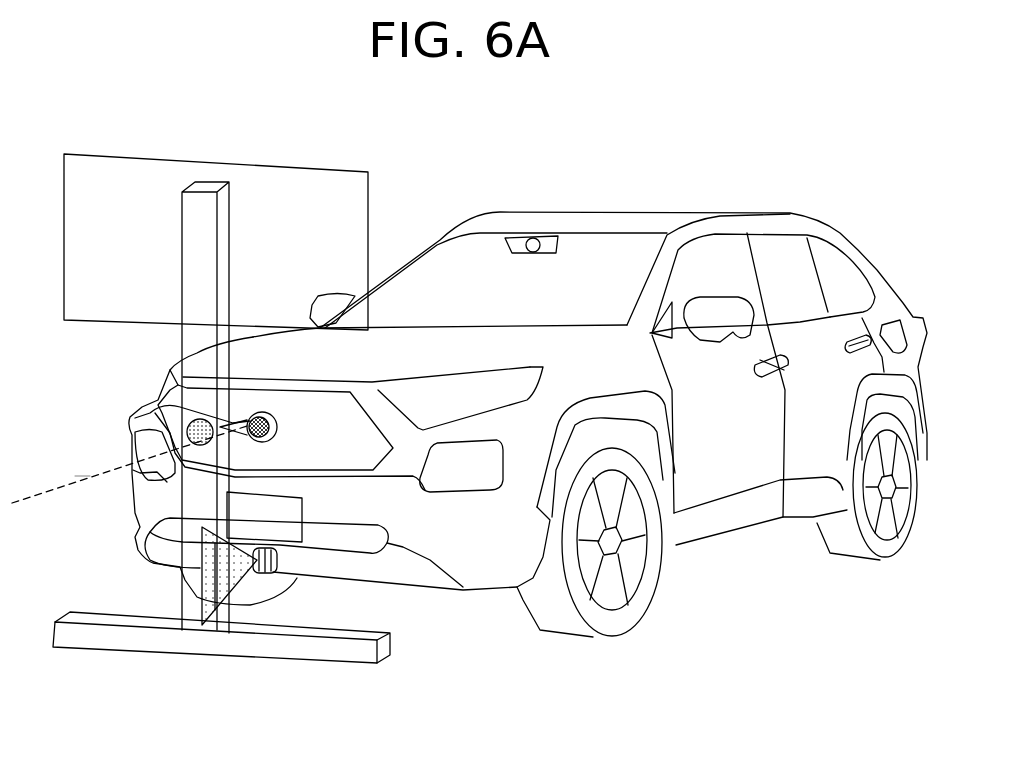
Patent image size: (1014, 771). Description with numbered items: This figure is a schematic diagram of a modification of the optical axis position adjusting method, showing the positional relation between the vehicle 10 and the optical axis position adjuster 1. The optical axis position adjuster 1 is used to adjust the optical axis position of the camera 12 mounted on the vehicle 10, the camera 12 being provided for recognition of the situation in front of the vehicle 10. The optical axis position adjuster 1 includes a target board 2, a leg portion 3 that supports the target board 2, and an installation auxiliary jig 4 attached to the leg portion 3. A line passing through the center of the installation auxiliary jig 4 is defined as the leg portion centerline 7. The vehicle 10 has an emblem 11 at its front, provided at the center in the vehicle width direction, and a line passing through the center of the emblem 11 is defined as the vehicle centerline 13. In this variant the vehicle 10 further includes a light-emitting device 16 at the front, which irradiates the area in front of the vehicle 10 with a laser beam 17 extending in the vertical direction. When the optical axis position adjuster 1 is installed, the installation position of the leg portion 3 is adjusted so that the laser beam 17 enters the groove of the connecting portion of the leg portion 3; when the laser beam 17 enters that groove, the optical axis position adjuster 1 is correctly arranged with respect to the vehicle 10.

The optical axis position adjuster 1 is at (203, 664).
The target board 2 is at (82, 256).
The leg portion 3 is at (383, 648).
The installation auxiliary jig 4 is at (187, 431).
The leg portion centerline 7 is at (68, 478).
The vehicle 10 is at (824, 189).
The emblem 11 is at (287, 437).
The camera 12 is at (543, 248).
The vehicle centerline 13 is at (82, 478).
The light-emitting device 16 is at (257, 560).
The laser beam 17 is at (248, 636).